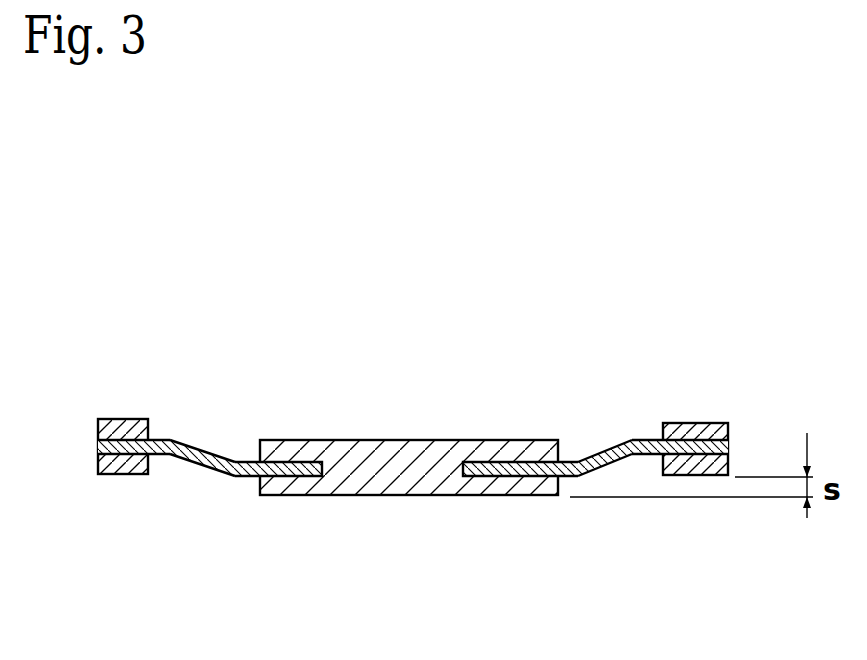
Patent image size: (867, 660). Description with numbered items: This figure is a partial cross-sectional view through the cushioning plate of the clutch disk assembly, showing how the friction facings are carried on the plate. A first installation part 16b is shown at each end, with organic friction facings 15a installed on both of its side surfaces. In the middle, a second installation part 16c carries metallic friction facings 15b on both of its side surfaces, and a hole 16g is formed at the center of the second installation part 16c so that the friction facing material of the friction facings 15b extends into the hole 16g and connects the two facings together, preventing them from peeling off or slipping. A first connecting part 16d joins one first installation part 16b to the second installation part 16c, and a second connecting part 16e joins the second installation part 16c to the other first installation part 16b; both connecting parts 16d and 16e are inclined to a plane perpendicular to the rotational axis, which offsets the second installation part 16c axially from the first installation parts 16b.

The friction facings 15a is at (131, 432).
The friction facings 15b is at (413, 455).
The first installation parts 16b is at (121, 475).
The second installation parts 16c is at (298, 468).
The first connecting parts 16d is at (217, 474).
The second connecting parts 16e is at (594, 472).
The hole 16g is at (455, 472).